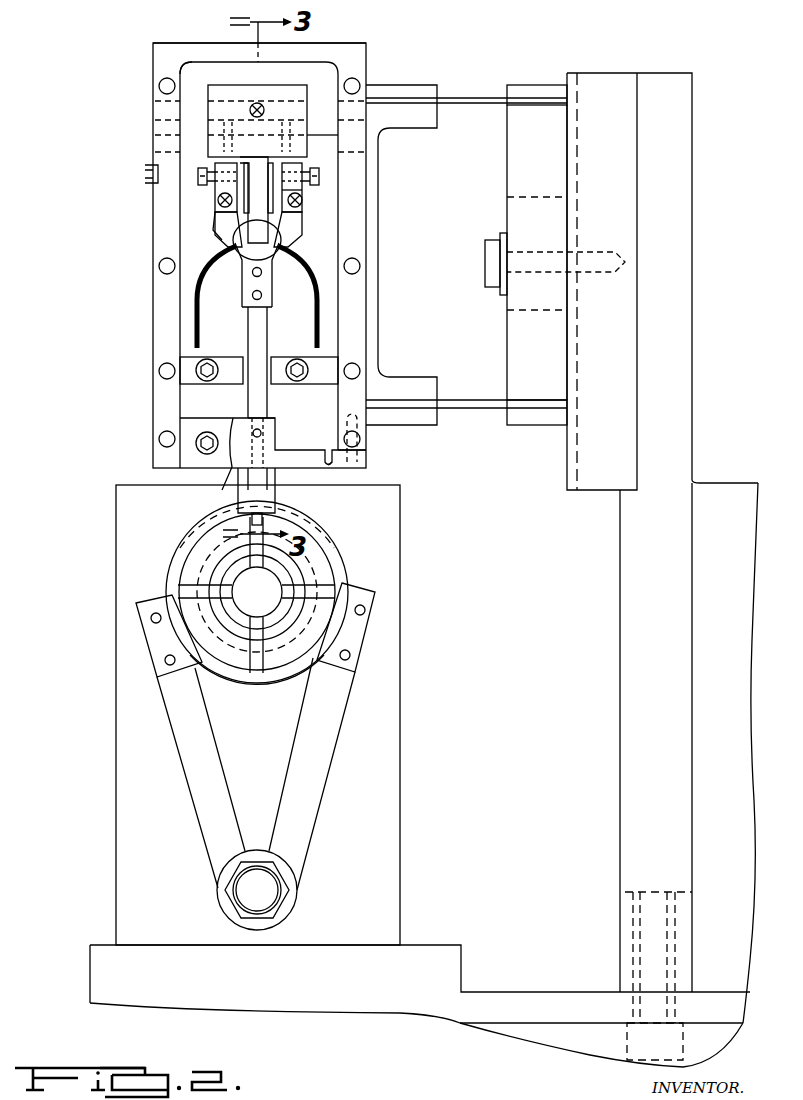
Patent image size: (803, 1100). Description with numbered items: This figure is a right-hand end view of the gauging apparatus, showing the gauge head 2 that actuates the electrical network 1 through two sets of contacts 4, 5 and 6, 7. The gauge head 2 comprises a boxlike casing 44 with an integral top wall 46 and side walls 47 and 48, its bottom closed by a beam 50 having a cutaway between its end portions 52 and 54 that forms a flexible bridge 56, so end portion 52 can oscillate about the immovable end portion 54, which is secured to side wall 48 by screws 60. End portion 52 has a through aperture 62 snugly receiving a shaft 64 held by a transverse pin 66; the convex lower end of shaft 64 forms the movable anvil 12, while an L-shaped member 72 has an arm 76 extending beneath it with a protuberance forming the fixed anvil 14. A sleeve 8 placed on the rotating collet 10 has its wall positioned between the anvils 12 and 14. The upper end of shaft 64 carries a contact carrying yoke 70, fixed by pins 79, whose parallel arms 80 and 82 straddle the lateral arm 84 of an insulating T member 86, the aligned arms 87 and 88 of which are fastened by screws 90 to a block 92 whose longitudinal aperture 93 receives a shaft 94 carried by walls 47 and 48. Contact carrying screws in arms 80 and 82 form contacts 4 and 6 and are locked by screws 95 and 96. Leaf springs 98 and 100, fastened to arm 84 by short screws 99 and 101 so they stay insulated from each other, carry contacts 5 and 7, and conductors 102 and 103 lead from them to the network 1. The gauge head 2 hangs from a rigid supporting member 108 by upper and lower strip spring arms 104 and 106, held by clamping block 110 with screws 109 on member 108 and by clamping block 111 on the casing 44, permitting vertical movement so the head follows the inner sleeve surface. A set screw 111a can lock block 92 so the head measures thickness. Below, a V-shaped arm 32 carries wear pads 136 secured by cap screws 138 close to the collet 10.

The electrical network 1 is at (137, 341).
The gauge head 2 is at (400, 86).
The contact 4 is at (198, 176).
The contact 5 is at (243, 160).
The contact 6 is at (319, 177).
The contact 7 is at (303, 191).
The sleeve 8 is at (262, 690).
The collet 10 is at (246, 678).
The movable anvil 12 is at (283, 502).
The fixed anvil 14 is at (250, 510).
The V-shaped arm 32 is at (312, 789).
The boxlike casing 44 is at (372, 50).
The top wall 46 is at (182, 24).
The side wall 47 is at (165, 131).
The side wall 48 is at (375, 130).
The beam 50 is at (311, 442).
The beam end portion 52 is at (222, 490).
The beam end portion 54 is at (370, 452).
The flexible bridge 56 is at (327, 470).
The screws 60 is at (368, 461).
The through aperture 62 is at (270, 416).
The shaft 64 is at (248, 333).
The transverse pin 66 is at (254, 430).
The contact carrying yoke 70 is at (205, 245).
The L-shaped member 72 is at (290, 514).
The arm 76 is at (300, 527).
The pins 79 is at (255, 285).
The yoke arm 80 is at (216, 218).
The yoke arm 82 is at (380, 242).
The lateral arm 84 is at (292, 246).
The T member 86 is at (266, 128).
The aligned arm 87 is at (205, 142).
The aligned arm 88 is at (307, 150).
The screws 90 is at (145, 170).
The block 92 is at (183, 78).
The longitudinal aperture 93 is at (160, 91).
The shaft 94 is at (190, 112).
The locking screw 95 is at (244, 200).
The locking screw 96 is at (276, 207).
The leaf spring 98 is at (238, 207).
The screw 99 is at (225, 240).
The leaf spring 100 is at (300, 226).
The screw 101 is at (278, 285).
The conductor 102 is at (197, 304).
The conductor 103 is at (320, 322).
The upper strip spring arm 104 is at (461, 97).
The lower strip spring arm 106 is at (470, 402).
The rigid supporting member 108 is at (682, 163).
The screws 109 is at (486, 262).
The clamping block 110 is at (548, 332).
The clamping block 111 is at (383, 283).
The set screw 111a is at (255, 100).
The wear pad 136 is at (157, 634).
The cap screws 138 is at (151, 618).